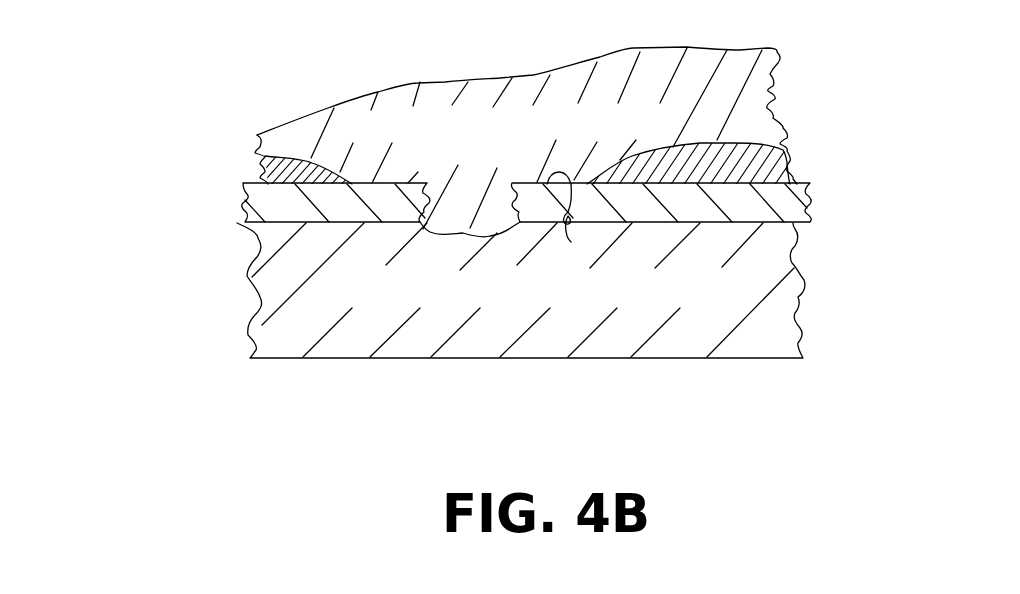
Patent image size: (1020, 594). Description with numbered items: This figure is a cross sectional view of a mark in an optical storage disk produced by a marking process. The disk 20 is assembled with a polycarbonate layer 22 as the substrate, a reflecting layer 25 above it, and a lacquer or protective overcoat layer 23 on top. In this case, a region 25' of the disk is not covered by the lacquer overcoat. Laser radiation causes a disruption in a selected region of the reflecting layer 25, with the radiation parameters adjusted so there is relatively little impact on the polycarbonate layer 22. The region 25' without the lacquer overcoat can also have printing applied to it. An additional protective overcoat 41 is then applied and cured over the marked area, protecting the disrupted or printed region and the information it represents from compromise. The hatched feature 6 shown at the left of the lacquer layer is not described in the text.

The disk 20 is at (562, 189).
The polycarbonate layer 22 is at (793, 320).
The reflecting layer 25 is at (580, 202).
The region not covered by the lacquer overcoat 25' is at (581, 214).
The protective overcoat 41 is at (442, 82).
The lacquer overcoat layer 23 is at (783, 162).
The hatched defect region 6 is at (265, 157).